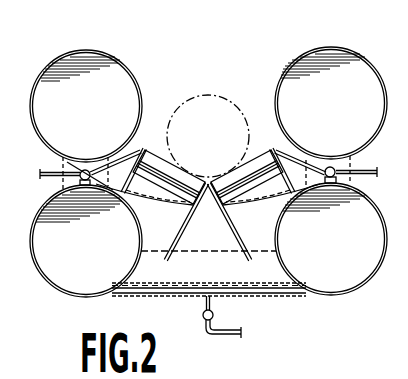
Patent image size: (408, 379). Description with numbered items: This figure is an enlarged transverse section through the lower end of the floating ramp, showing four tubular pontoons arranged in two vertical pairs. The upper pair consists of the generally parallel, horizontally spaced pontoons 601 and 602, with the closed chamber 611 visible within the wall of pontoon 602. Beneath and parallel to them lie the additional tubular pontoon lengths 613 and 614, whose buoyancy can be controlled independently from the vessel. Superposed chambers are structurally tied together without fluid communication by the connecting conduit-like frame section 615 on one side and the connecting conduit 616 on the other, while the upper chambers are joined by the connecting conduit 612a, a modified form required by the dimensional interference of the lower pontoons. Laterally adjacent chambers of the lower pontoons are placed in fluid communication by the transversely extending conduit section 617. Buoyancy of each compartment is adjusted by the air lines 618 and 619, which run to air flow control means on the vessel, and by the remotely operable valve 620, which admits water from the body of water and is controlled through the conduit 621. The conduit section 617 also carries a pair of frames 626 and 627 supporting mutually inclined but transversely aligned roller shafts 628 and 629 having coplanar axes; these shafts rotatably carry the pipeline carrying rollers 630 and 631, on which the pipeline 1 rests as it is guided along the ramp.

The pipeline 1 is at (213, 132).
The pontoon 601 is at (311, 52).
The pontoon 602 is at (135, 41).
The closed chamber 611 is at (92, 102).
The connecting conduit 612a is at (287, 152).
The tubular pontoon length 613 is at (345, 284).
The tubular pontoon length 614 is at (60, 288).
The connecting conduit-like frame section 615 is at (357, 182).
The connecting conduit 616 is at (69, 167).
The transversely extending conduit section 617 is at (257, 284).
The air line 618 is at (73, 188).
The air line 619 is at (339, 185).
The valve 620 is at (203, 317).
The conduit 621 is at (239, 333).
The frame 626 is at (135, 204).
The frame 627 is at (287, 188).
The roller shaft 628 is at (140, 158).
The roller shaft 629 is at (276, 147).
The pipeline carrying roller 630 is at (178, 169).
The pipeline carrying roller 631 is at (244, 167).